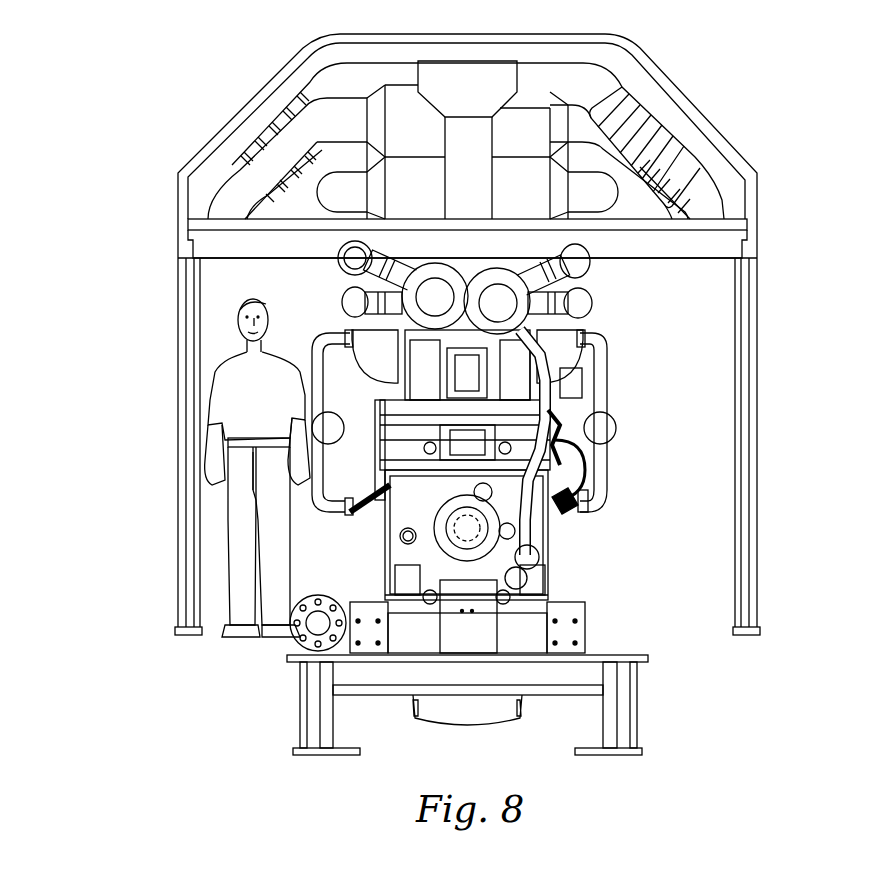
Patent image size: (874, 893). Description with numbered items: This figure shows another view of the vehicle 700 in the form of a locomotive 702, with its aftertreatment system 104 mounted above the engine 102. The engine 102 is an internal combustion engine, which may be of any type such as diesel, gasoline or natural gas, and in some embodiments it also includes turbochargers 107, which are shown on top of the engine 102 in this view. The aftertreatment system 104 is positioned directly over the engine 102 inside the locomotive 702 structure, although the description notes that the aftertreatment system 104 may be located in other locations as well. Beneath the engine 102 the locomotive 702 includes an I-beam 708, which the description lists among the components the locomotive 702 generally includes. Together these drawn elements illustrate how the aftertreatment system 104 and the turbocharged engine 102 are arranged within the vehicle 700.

The vehicle 700 is at (197, 102).
The locomotive 702 is at (735, 88).
The aftertreatment system 104 is at (527, 85).
The turbochargers 107 is at (418, 293).
The engine 102 is at (513, 493).
The I-beam 708 is at (323, 765).